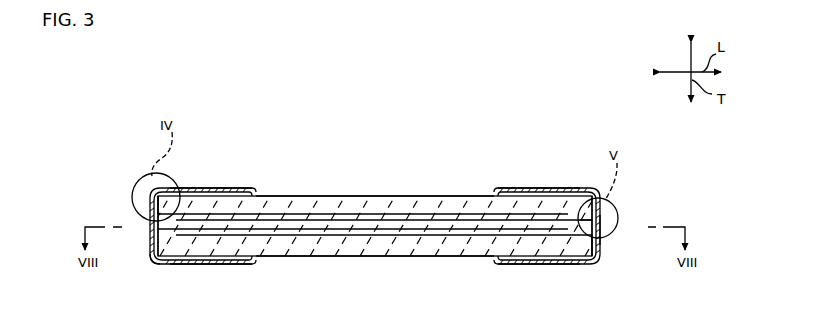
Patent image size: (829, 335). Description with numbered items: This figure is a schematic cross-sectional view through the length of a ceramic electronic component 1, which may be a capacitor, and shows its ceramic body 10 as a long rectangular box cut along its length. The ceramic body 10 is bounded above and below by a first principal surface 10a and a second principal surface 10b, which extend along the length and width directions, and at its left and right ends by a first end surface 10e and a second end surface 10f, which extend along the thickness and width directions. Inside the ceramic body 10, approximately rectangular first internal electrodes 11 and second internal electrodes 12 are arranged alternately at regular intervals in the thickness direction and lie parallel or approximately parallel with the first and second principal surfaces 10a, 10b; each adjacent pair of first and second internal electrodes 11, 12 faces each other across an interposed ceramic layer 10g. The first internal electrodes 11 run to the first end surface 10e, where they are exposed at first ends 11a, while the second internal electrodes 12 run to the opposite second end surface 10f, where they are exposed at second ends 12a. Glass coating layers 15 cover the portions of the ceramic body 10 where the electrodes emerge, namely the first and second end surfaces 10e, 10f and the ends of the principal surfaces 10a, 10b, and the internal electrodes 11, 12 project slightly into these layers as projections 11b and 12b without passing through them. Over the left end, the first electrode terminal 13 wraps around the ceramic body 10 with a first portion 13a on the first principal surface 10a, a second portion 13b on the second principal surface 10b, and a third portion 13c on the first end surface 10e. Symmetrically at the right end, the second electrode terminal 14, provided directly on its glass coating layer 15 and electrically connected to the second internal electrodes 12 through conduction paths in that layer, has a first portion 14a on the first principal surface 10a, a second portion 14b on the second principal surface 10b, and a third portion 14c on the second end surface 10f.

The ceramic electronic component 1 is at (512, 147).
The ceramic body 10 is at (423, 194).
The first principal surface 10a is at (360, 195).
The second principal surface 10b is at (378, 257).
The first end surface 10e is at (155, 238).
The second end surface 10f is at (597, 240).
The ceramic layer 10g is at (419, 236).
The first internal electrode 11 is at (300, 213).
The first end 11a is at (163, 186).
The projection 11b is at (156, 229).
The second internal electrode 12 is at (297, 236).
The second end 12a is at (592, 264).
The projection 12b is at (602, 219).
The first electrode terminal 13 is at (144, 212).
The first portion 13a is at (217, 188).
The second portion 13b is at (205, 264).
The third portion 13c is at (146, 206).
The second electrode terminal 14 is at (607, 207).
The first portion 14a is at (558, 188).
The second portion 14b is at (550, 264).
The third portion 14c is at (603, 228).
The glass coating layer 15 is at (170, 264).